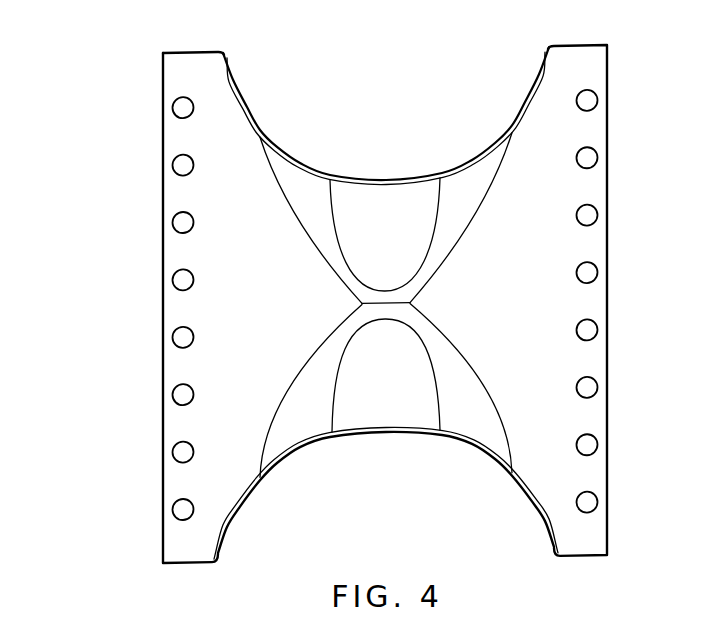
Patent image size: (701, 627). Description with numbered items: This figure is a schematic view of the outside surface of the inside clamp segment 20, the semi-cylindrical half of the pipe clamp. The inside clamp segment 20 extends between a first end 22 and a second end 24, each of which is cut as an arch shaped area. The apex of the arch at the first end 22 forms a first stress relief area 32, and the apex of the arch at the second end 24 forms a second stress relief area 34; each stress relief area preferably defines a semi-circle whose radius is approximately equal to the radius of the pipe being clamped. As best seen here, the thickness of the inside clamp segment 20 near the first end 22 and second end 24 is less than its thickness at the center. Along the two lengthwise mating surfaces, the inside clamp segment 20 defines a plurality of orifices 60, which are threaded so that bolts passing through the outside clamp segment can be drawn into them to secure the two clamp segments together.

The inside clamp segment 20 is at (74, 218).
The first end 22 is at (362, 497).
The second end 24 is at (394, 83).
The first stress relief area 32 is at (388, 430).
The second stress relief area 34 is at (384, 178).
The orifices 60 is at (172, 106).